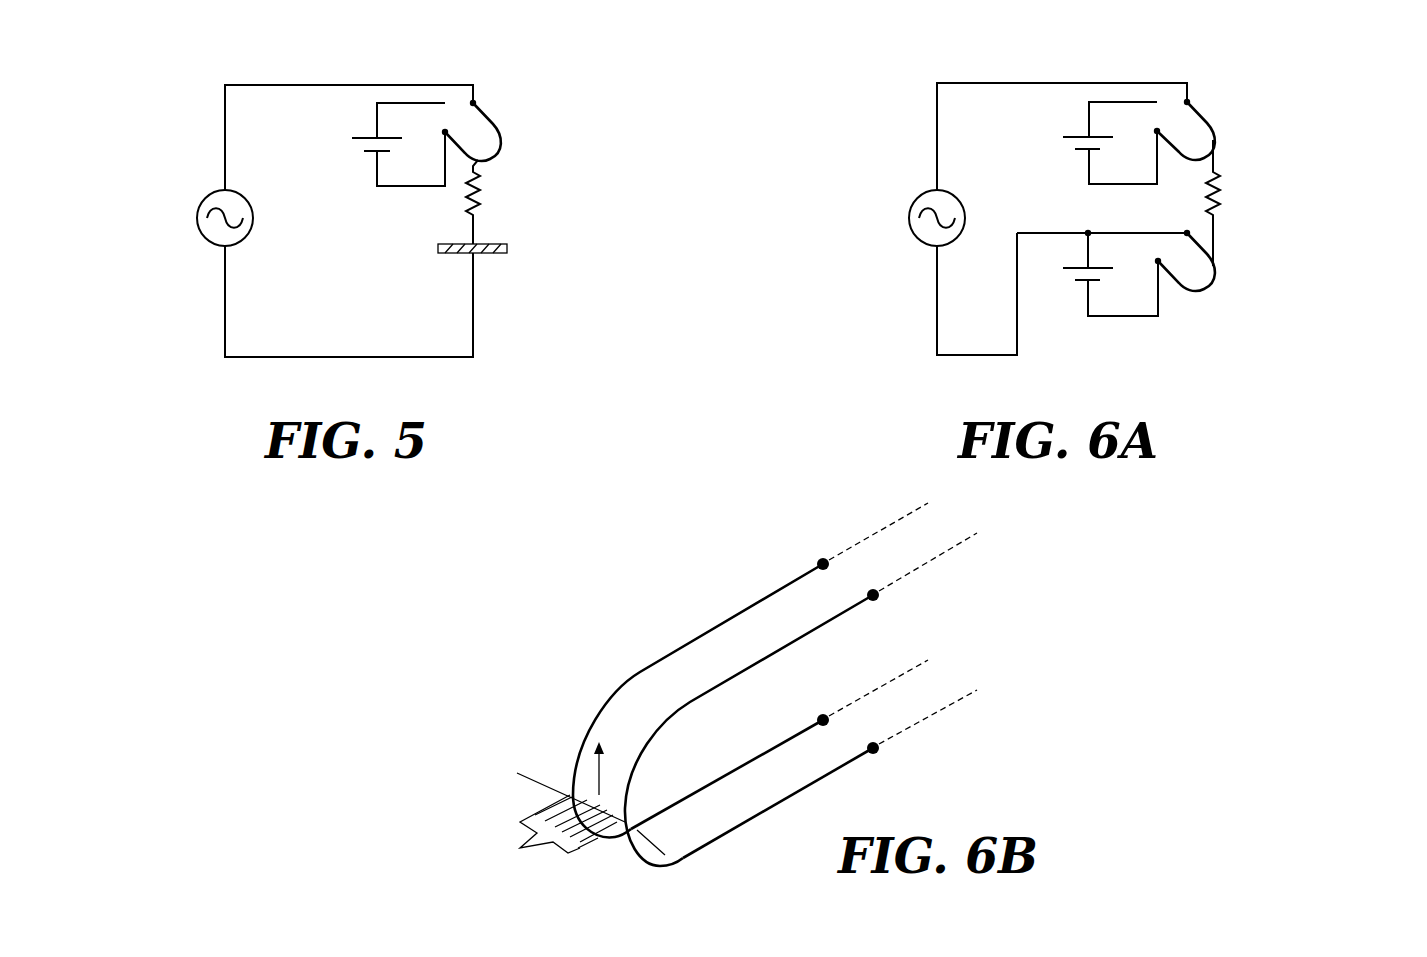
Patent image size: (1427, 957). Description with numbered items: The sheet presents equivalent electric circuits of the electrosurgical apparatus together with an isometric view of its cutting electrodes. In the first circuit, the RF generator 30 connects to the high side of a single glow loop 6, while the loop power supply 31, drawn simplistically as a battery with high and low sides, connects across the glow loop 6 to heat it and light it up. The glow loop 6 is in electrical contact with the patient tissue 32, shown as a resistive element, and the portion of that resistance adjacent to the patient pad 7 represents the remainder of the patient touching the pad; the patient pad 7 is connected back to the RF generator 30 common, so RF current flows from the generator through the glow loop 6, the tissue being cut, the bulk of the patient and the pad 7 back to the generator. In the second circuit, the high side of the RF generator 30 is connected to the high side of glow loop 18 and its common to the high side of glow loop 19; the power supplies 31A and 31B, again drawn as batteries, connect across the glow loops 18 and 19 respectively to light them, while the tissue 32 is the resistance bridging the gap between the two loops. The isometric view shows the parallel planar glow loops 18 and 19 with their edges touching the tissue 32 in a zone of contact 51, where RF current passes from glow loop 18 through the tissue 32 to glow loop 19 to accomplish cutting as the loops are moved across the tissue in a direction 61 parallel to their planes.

In FIG. 5, the RF generator 30 is at (215, 238).
In FIG. 6A, the RF generator 30 is at (927, 238).
In FIG. 5, the loop power supply 31 is at (343, 92).
In FIG. 6A, the power supply 31A is at (1055, 92).
In FIG. 6A, the power supply 31B is at (1056, 330).
In FIG. 5, the glow loop 6 is at (499, 140).
In FIG. 5, the patient pad 7 is at (506, 250).
In FIG. 6A, the glow loop 18 is at (1215, 135).
In FIG. 6B, the glow loop 18 is at (727, 833).
In FIG. 6A, the glow loop 19 is at (1215, 268).
In FIG. 6B, the glow loop 19 is at (700, 636).
In FIG. 5, the patient tissue 32 is at (484, 195).
In FIG. 6A, the patient tissue 32 is at (1222, 200).
In FIG. 6B, the patient tissue 32 is at (517, 773).
In FIG. 6B, the zone of contact 51 is at (521, 850).
In FIG. 6B, the direction 61 is at (597, 773).